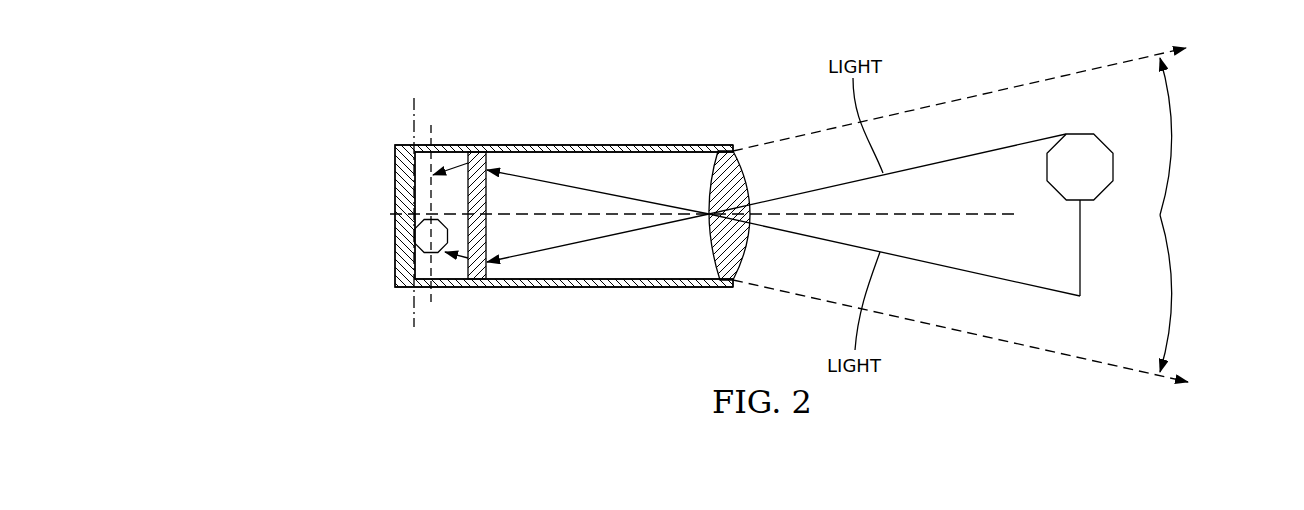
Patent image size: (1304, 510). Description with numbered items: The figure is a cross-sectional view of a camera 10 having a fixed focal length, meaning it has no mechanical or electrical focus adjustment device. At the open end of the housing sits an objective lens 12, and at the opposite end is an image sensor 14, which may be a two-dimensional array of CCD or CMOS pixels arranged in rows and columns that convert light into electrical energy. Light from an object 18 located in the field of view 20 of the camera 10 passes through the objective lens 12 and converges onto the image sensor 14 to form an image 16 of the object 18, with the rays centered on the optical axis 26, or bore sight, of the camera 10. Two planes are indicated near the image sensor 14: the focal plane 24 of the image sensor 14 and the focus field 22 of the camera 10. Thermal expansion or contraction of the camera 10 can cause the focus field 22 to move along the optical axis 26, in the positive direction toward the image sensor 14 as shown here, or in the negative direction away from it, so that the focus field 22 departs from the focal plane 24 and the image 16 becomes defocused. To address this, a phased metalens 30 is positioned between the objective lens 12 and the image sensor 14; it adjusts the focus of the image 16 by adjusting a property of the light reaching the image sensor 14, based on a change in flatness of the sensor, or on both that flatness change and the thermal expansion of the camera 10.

The camera 10 is at (400, 70).
The objective lens 12 is at (718, 152).
The image sensor 14 is at (398, 243).
The image 16 is at (433, 253).
The object 18 is at (1080, 133).
The field of view 20 is at (1193, 307).
The focus field 22 is at (432, 128).
The focal plane 24 is at (414, 323).
The optical axis 26 is at (815, 214).
The phased metalens 30 is at (480, 152).